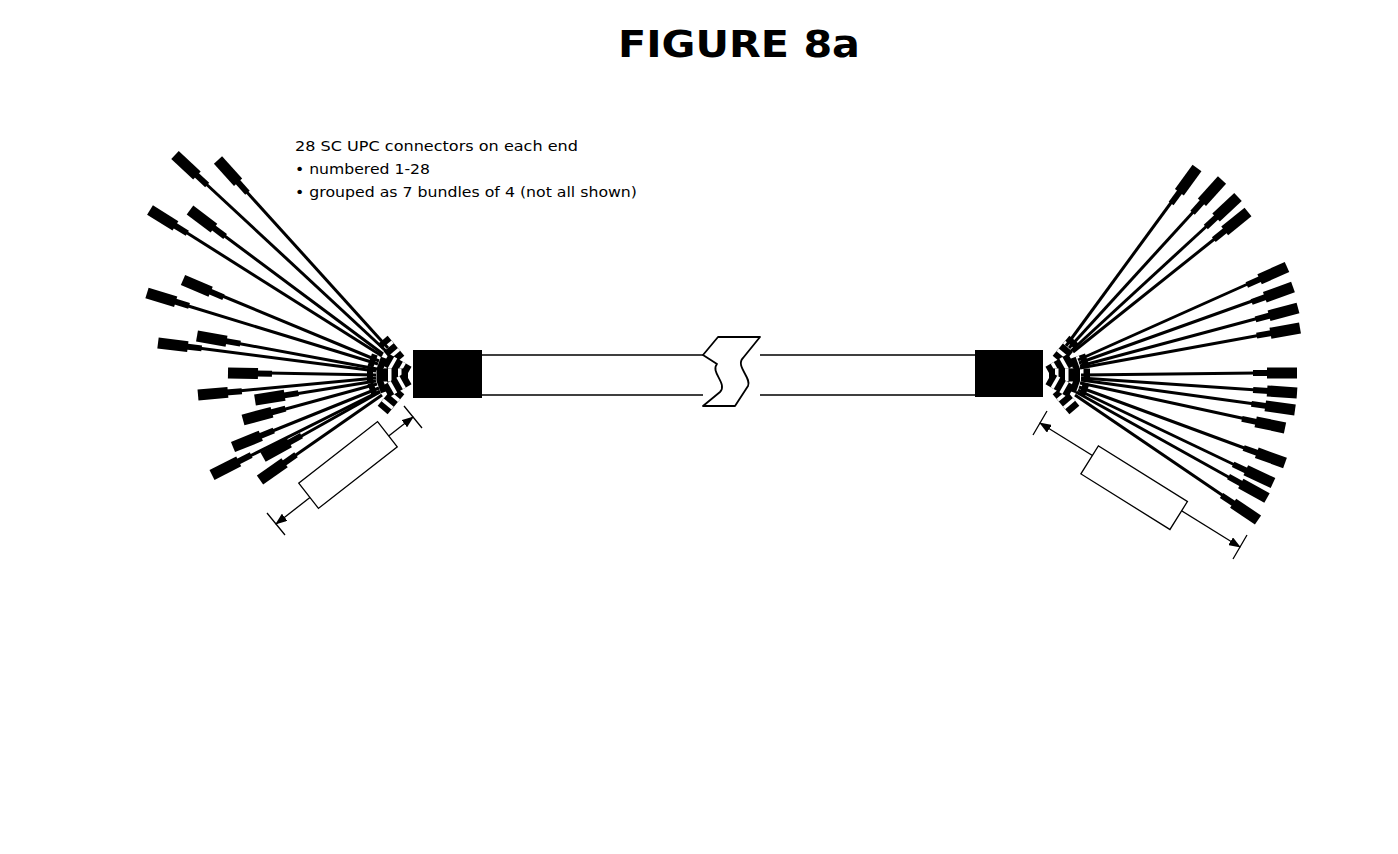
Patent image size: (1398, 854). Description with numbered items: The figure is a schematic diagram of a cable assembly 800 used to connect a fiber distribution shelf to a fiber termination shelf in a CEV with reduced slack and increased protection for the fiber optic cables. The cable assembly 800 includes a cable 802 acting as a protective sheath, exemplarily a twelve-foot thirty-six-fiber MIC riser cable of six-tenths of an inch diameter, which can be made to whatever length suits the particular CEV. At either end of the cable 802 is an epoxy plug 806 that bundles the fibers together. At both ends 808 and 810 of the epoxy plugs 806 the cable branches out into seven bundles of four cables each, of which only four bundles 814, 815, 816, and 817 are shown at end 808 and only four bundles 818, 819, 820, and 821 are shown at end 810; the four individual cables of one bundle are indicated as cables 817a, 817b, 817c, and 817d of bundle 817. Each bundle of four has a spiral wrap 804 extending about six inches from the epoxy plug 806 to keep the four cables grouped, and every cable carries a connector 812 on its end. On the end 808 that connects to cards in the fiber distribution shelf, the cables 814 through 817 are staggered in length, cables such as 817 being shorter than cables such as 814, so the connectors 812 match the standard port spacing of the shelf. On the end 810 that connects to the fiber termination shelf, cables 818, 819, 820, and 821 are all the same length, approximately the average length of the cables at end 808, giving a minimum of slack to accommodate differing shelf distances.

The cable assembly 800 is at (728, 368).
The cable 802 is at (612, 399).
The spiral wrap 804 is at (402, 338).
The epoxy plug 806 is at (995, 399).
The end 808 is at (344, 470).
The end 810 is at (1140, 485).
The connectors 812 is at (174, 152).
The bundle 814 is at (153, 190).
The bundle 815 is at (146, 292).
The bundle 816 is at (217, 412).
The bundle 817 is at (208, 517).
The cable 817a is at (223, 452).
The cable 817b is at (207, 489).
The cable 817c is at (262, 474).
The cable 817d is at (260, 503).
The bundle 818 is at (1240, 188).
The bundle 819 is at (1305, 306).
The bundle 820 is at (1304, 410).
The bundle 821 is at (1281, 507).